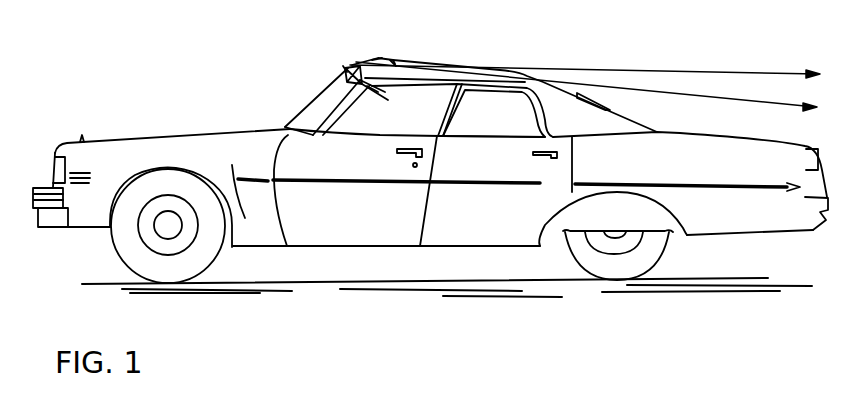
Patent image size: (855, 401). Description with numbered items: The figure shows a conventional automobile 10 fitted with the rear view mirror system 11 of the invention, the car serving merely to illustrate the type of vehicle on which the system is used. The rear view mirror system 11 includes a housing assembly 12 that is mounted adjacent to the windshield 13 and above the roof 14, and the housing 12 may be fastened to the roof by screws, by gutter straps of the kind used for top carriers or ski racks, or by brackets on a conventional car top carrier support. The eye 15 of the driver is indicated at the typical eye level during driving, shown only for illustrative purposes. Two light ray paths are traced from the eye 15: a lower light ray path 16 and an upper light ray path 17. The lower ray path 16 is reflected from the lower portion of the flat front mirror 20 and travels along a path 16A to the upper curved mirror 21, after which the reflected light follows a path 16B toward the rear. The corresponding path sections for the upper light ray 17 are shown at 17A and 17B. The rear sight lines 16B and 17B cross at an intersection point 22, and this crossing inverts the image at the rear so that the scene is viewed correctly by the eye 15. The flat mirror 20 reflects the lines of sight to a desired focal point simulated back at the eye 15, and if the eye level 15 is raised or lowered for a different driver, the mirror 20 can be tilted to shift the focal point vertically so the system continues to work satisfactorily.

The automobile 10 is at (200, 146).
The rear view mirror system 11 is at (330, 48).
The housing assembly 12 is at (354, 62).
The windshield 13 is at (307, 117).
The roof 14 is at (475, 90).
The eye of a viewer 15 is at (386, 98).
The lower light ray path 16 is at (372, 90).
The path 16A is at (395, 63).
The path 16B is at (720, 100).
The upper light ray path 17 is at (383, 90).
The path section 17A is at (343, 68).
The path section 17B is at (698, 72).
The front mirror 20 is at (347, 78).
The upper curved mirror 21 is at (378, 58).
The intersection point 22 is at (490, 70).